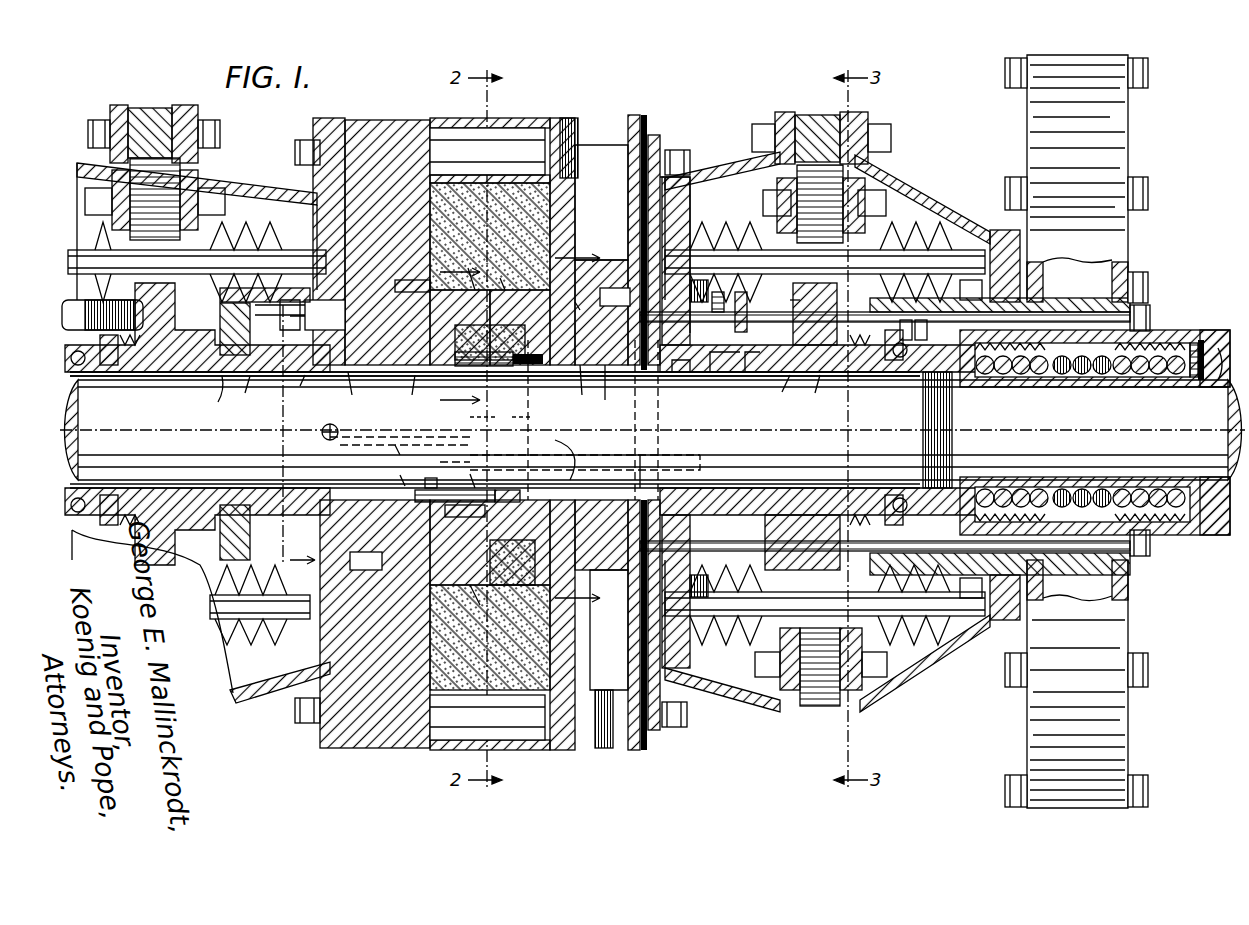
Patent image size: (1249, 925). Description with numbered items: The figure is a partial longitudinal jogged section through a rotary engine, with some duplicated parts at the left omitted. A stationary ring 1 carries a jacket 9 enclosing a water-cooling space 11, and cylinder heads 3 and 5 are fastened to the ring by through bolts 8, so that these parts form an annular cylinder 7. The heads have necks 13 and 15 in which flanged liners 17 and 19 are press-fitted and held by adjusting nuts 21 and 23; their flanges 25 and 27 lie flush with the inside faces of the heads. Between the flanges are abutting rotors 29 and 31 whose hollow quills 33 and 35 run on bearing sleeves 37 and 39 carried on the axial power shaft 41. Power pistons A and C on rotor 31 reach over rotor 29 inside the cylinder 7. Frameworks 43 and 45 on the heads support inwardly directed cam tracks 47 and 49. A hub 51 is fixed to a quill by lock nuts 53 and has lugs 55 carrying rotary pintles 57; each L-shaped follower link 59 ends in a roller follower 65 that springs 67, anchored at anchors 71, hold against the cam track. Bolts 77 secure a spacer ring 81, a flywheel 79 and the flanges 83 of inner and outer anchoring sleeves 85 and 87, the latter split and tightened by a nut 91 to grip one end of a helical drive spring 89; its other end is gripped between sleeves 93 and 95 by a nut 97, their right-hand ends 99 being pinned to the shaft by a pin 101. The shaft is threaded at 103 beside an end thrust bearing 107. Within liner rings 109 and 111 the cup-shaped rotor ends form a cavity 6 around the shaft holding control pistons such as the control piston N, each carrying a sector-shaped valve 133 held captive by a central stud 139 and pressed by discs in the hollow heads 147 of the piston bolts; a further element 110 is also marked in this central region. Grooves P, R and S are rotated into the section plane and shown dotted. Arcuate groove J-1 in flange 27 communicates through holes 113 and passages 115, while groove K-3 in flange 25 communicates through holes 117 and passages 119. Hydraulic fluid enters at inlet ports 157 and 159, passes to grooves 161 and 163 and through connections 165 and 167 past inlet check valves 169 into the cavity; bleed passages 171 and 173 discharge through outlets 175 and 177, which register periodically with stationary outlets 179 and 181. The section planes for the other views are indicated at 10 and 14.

The stationary ring 1 is at (468, 178).
The cylinder head 3 is at (395, 135).
The cylinder head 5 is at (568, 120).
The annular cylinder 7 is at (560, 225).
The through bolts 8 is at (295, 150).
The jacket 9 is at (455, 120).
The water-cooling space 11 is at (515, 128).
The neck 13 is at (365, 325).
The neck 15 is at (622, 426).
The flanged liner 17 is at (303, 390).
The flanged liner 19 is at (685, 376).
The adjusting nut 21 is at (265, 291).
The adjusting nut 23 is at (747, 305).
The liner flange 25 is at (412, 280).
The liner flange 27 is at (572, 262).
The rotor 29 is at (460, 324).
The rotor 31 is at (520, 324).
The hollow quill 33 is at (240, 394).
The hollow quill 35 is at (781, 393).
The bearing sleeve 37 is at (213, 399).
The bearing sleeve 39 is at (814, 393).
The power shaft 41 is at (653, 430).
The supporting framework 43 is at (118, 108).
The supporting framework 45 is at (787, 112).
The cam track 47 is at (152, 115).
The cam track 49 is at (820, 118).
The hub 51 is at (165, 290).
The lock nuts 53 is at (120, 365).
The lugs 55 is at (784, 298).
The pintle 57 is at (526, 433).
The follower link 59 is at (780, 215).
The roller follower 65 is at (890, 698).
The springs 67 is at (515, 435).
The anchors 71 is at (837, 439).
The bolts 77 is at (1154, 546).
The flywheel 79 is at (1110, 125).
The spacer ring 81 is at (909, 311).
The flanges 83 is at (929, 311).
The inner anchoring sleeve 85 is at (985, 387).
The outer anchoring sleeve 87 is at (885, 431).
The helical drive spring 89 is at (1080, 431).
The nut 91 is at (1021, 428).
The anchoring sleeve 93 is at (1190, 387).
The anchoring sleeve 95 is at (1192, 343).
The nut 97 is at (1136, 428).
The sleeve ends 99 is at (1220, 387).
The pin 101 is at (1202, 340).
The threaded portion 103 is at (925, 436).
The end thrust bearing 107 is at (85, 366).
The liner ring 109 is at (465, 598).
The friction disc 110 is at (494, 394).
The liner ring 111 is at (512, 562).
The holes 113 is at (574, 298).
The passages 115 is at (496, 342).
The holes 117 is at (490, 542).
The passages 119 is at (465, 515).
The valve 133 is at (474, 427).
The central stud 139 is at (469, 271).
The hollow head 147 is at (510, 428).
The hydraulic fluid inlet port 157 is at (322, 430).
The hydraulic fluid inlet port 159 is at (650, 136).
The groove 161 is at (359, 394).
The groove 163 is at (629, 471).
The connection 165 is at (406, 452).
The connection 167 is at (587, 422).
The inlet check valves 169 is at (498, 472).
The passages 171 is at (495, 420).
The passages 173 is at (589, 410).
The outlets 175 is at (495, 424).
The outlets 177 is at (730, 410).
The stationary outlets 179 is at (235, 330).
The stationary outlets 181 is at (715, 415).
The power piston A is at (550, 200).
The power piston C is at (490, 637).
The groove P is at (555, 441).
The control piston N is at (467, 473).
The groove R is at (409, 394).
The groove S is at (399, 472).
The arcuate groove J-1 is at (615, 297).
The arcuate groove K-3 is at (366, 561).
The cavity 6 is at (500, 413).
The section line 10 is at (433, 332).
The section line 14 is at (323, 433).